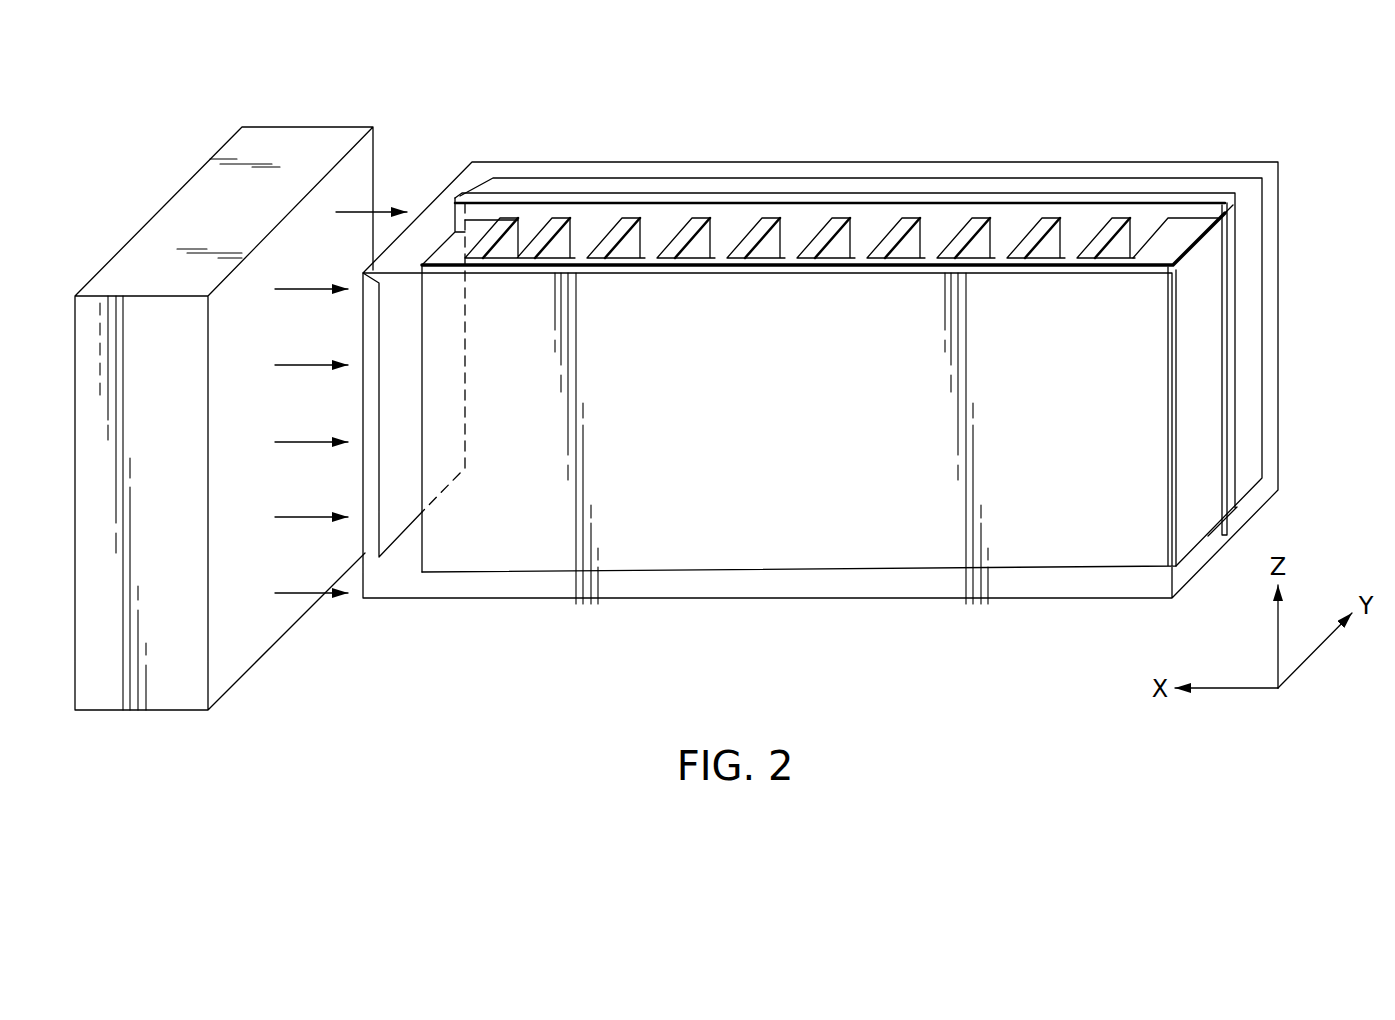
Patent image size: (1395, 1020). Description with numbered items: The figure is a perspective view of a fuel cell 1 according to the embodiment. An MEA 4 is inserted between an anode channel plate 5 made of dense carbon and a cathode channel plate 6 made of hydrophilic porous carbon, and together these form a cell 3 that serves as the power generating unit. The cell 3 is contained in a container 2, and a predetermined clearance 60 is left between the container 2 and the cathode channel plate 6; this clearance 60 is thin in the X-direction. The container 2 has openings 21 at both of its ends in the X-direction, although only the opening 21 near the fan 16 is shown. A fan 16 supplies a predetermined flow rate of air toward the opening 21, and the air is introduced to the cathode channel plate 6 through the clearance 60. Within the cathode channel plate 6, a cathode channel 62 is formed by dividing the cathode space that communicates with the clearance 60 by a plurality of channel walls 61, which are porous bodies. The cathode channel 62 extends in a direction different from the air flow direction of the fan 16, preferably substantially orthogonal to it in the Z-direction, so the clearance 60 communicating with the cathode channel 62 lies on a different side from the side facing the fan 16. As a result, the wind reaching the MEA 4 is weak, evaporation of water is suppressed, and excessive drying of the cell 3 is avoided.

The liquid crystal display device 1 is at (1348, 214).
The container 2 is at (1281, 231).
The cell 3 is at (1312, 368).
The MEA 4 is at (1228, 416).
The anode channel plate 5 is at (1252, 379).
The cathode channel plate 6 is at (1210, 448).
The fan 16 is at (277, 137).
The opening 21 is at (407, 293).
The clearance 60 is at (408, 552).
The channel wall 61 is at (832, 228).
The cathode channel 62 is at (723, 218).